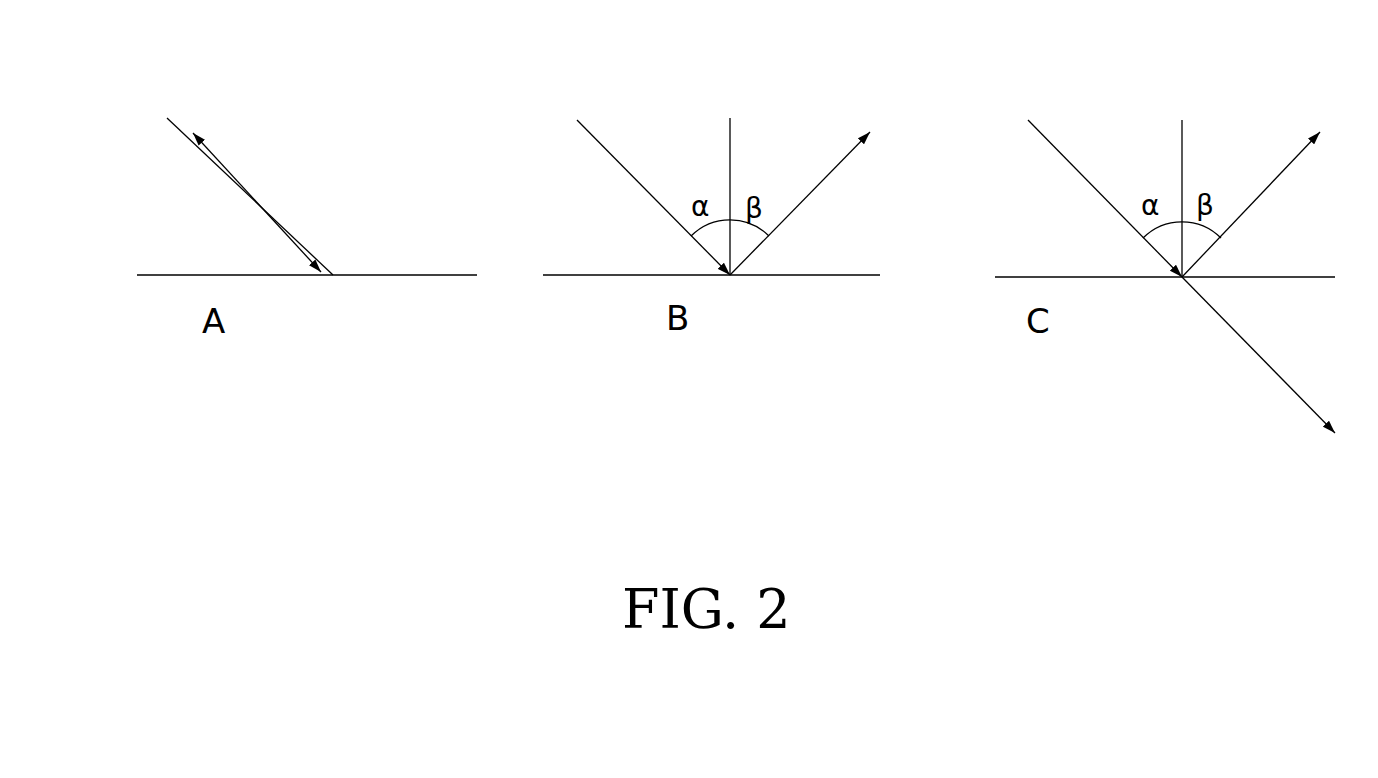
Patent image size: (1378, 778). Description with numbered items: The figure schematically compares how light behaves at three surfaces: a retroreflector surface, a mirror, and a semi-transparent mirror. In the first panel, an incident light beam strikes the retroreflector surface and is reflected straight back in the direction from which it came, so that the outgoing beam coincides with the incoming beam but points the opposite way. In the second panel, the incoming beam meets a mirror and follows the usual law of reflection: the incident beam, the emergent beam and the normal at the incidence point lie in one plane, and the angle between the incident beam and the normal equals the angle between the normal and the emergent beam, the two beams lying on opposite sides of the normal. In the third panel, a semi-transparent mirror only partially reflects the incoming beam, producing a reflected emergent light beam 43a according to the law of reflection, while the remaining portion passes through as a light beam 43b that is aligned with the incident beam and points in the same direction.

The reflected emergent light beam 43a is at (1266, 193).
The light beam 43b is at (1259, 342).